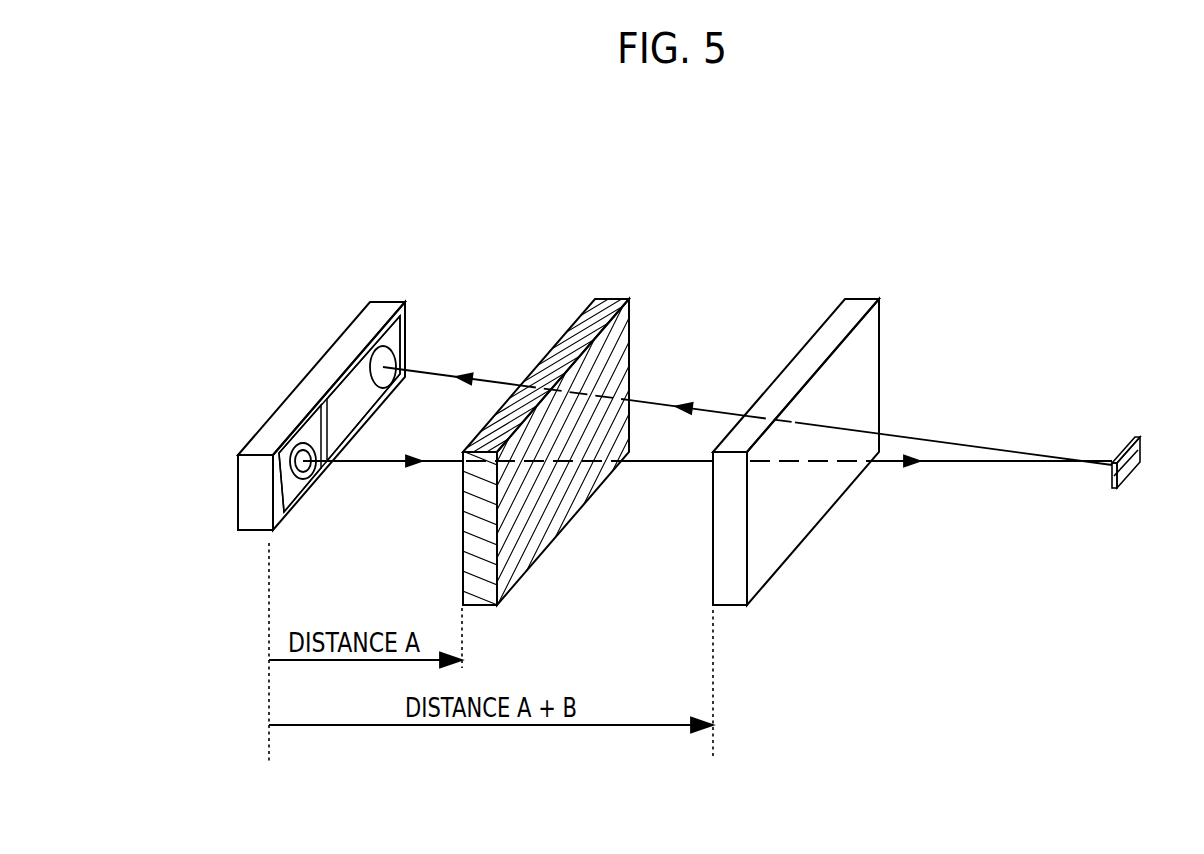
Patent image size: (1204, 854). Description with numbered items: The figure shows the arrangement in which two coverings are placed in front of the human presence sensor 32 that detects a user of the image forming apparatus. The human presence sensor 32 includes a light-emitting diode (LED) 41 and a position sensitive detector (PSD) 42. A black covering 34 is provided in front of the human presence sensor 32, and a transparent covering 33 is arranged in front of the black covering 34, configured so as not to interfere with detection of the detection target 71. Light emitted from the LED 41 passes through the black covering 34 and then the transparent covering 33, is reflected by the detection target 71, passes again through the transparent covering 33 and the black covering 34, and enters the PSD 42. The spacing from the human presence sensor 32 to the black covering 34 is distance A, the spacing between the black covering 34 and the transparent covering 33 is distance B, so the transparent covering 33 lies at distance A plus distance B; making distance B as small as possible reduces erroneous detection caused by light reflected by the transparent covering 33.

The human presence sensor 32 is at (390, 301).
The transparent covering 33 is at (863, 299).
The black covering 34 is at (614, 299).
The light-emitting diode (LED) 41 is at (275, 482).
The position sensitive detector (PSD) 42 is at (403, 341).
The detection target 71 is at (1138, 437).